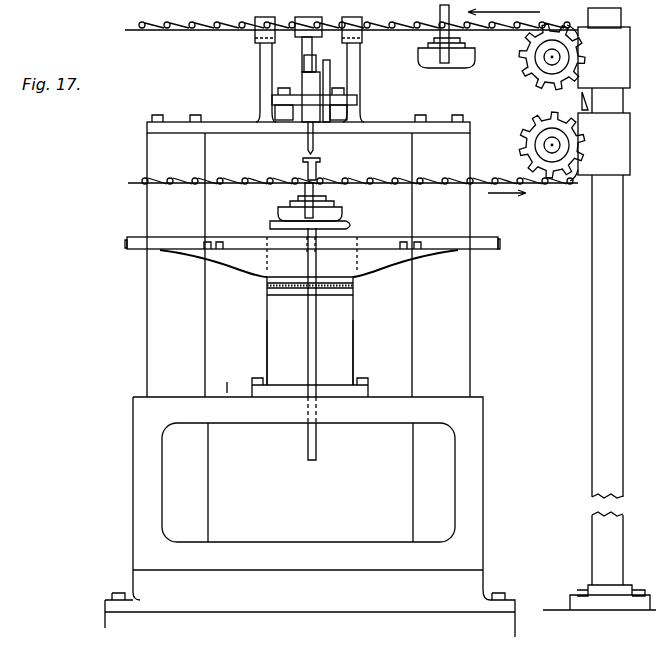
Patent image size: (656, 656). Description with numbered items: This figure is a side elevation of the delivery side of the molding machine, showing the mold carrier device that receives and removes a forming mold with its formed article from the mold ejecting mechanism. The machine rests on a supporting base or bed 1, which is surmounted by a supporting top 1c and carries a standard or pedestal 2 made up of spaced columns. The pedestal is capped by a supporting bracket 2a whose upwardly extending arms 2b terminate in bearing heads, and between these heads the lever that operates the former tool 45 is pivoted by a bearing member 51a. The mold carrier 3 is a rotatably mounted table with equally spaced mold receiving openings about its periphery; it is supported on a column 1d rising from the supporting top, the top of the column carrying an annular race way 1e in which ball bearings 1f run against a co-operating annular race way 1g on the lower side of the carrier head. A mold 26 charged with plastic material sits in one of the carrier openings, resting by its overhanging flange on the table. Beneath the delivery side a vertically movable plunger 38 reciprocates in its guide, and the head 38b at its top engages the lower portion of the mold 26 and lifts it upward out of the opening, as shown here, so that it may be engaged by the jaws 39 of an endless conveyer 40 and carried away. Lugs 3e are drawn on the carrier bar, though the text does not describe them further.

The supporting base or bed 1 is at (310, 517).
The supporting top 1c is at (294, 385).
The column 1d is at (343, 347).
The annular race way 1e is at (340, 294).
The ball bearings 1f is at (266, 284).
The annular race way 1g is at (353, 282).
The standard or pedestal 2 is at (153, 340).
The supporting bracket 2a is at (378, 128).
The upwardly extending arms 2b is at (260, 80).
The mold carrier 3 is at (242, 247).
The lugs 3e is at (418, 242).
The mold 26 is at (468, 60).
The plunger 38 is at (308, 322).
The head 38b is at (353, 226).
The jaws 39 is at (439, 32).
The endless conveyer 40 is at (205, 28).
The former tool 45 is at (307, 148).
The bearing member 51a is at (300, 33).